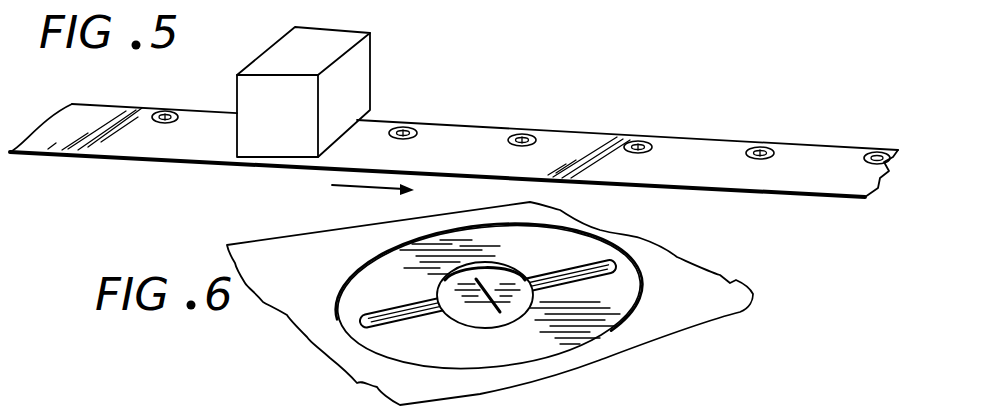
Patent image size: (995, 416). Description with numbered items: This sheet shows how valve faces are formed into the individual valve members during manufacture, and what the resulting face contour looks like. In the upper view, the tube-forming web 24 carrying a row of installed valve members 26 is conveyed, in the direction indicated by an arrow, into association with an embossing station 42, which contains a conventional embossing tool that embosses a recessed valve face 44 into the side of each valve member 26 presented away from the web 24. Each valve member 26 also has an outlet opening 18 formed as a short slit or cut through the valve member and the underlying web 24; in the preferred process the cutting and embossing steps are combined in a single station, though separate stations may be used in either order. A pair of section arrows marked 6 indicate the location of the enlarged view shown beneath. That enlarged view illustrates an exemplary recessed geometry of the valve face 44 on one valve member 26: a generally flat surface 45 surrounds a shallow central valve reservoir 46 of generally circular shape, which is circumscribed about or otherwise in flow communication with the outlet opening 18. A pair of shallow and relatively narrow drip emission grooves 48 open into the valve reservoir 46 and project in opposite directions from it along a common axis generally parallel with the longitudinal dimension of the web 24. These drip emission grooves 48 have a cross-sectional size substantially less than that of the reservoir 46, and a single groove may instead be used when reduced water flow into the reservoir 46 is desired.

In FIG. 5, the section line for FIG. 6 is at (560, 125).
In FIG. 5, the outlet opening 18 is at (164, 111).
In FIG. 6, the outlet opening 18 is at (489, 276).
In FIG. 5, the tube-forming web 24 is at (118, 143).
In FIG. 6, the tube-forming web 24 is at (731, 287).
In FIG. 5, the valve member 26 is at (768, 157).
In FIG. 6, the valve member 26 is at (620, 325).
In FIG. 5, the embossing station 42 is at (341, 36).
In FIG. 5, the valve face 44 is at (645, 134).
In FIG. 6, the valve face 44 is at (396, 273).
In FIG. 6, the flat surface 45 is at (567, 335).
In FIG. 6, the valve reservoir 46 is at (467, 318).
In FIG. 6, the drip emission groove 48 is at (393, 318).